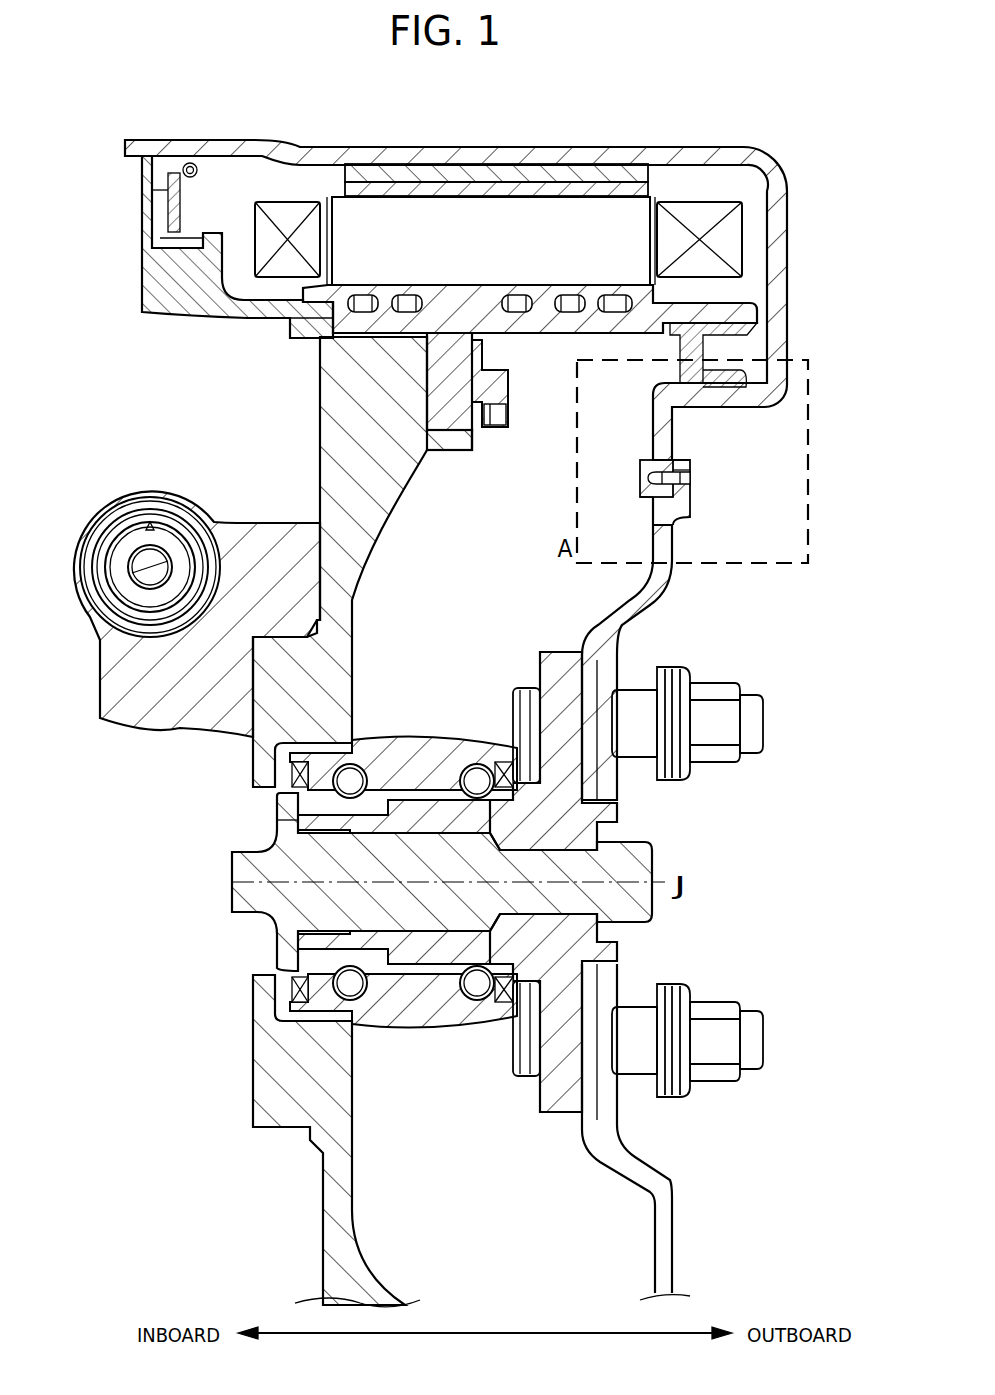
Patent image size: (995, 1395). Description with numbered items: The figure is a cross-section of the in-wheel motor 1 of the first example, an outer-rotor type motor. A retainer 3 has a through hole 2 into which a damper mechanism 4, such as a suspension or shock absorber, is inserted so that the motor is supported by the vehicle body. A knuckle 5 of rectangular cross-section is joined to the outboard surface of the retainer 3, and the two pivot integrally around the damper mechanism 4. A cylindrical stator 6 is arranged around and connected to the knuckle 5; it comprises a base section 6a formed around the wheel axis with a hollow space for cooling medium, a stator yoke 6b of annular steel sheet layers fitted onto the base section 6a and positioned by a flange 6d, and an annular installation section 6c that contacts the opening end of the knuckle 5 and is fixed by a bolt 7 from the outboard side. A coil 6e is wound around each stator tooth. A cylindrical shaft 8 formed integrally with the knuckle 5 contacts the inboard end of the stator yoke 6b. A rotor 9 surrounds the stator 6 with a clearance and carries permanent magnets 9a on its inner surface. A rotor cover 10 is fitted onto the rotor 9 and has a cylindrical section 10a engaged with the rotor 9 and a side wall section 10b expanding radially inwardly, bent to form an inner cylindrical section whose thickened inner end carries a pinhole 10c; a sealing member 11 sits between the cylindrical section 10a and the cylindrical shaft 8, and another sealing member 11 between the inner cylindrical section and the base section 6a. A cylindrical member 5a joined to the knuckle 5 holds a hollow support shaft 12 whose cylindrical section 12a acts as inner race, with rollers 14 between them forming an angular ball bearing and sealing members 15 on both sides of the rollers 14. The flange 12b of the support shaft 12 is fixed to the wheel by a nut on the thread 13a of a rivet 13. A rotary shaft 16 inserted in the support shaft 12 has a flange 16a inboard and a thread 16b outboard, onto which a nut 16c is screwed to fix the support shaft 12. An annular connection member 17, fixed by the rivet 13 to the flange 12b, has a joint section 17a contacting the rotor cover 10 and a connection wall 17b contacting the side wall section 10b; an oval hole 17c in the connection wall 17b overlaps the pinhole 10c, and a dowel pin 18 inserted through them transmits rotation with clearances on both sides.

The in-wheel motor 1 is at (103, 336).
The through hole 2 is at (88, 600).
The retainer 3 is at (266, 522).
The damper mechanism 4 is at (162, 527).
The knuckle 5 is at (262, 755).
The cylindrical member 5a is at (385, 762).
The stator 6 is at (443, 494).
The base section 6a is at (330, 320).
The stator yoke 6b is at (430, 212).
The installation section 6c is at (450, 445).
The flange 6d is at (658, 290).
The coil 6e is at (300, 205).
The bolt 7 is at (487, 395).
The cylindrical shaft 8 is at (188, 297).
The rotor 9 is at (592, 168).
The permanent magnet 9a is at (530, 185).
The rotor cover 10 is at (375, 127).
The cylindrical section 10a is at (490, 152).
The side wall section 10b is at (782, 232).
The pinhole 10c is at (647, 475).
The sealing member 11 is at (150, 177).
The support shaft 12 is at (608, 820).
The cylindrical section 12a is at (415, 805).
The flange 12b is at (567, 655).
The rivet 13 is at (520, 690).
The thread 13a is at (680, 669).
The roller 14 is at (477, 780).
The sealing member 15 is at (503, 770).
The rotary shaft 16 is at (245, 905).
The flange 16a is at (282, 820).
The thread 16b is at (625, 845).
The nut 16c is at (605, 930).
The connection member 17 is at (655, 600).
The joint section 17a is at (640, 500).
The connection wall 17b is at (692, 490).
The oval hole 17c is at (682, 465).
The dowel pin 18 is at (692, 478).